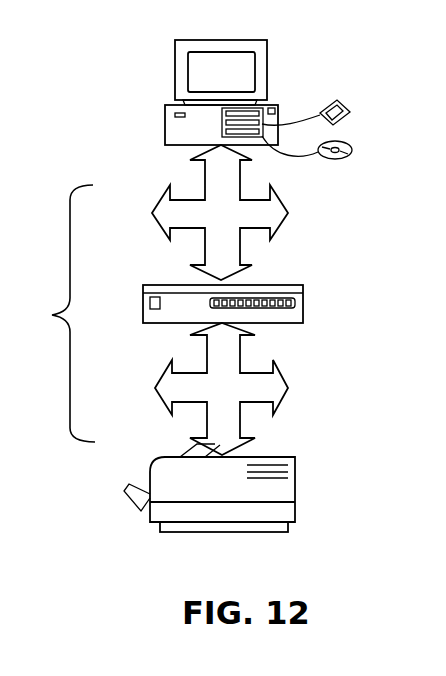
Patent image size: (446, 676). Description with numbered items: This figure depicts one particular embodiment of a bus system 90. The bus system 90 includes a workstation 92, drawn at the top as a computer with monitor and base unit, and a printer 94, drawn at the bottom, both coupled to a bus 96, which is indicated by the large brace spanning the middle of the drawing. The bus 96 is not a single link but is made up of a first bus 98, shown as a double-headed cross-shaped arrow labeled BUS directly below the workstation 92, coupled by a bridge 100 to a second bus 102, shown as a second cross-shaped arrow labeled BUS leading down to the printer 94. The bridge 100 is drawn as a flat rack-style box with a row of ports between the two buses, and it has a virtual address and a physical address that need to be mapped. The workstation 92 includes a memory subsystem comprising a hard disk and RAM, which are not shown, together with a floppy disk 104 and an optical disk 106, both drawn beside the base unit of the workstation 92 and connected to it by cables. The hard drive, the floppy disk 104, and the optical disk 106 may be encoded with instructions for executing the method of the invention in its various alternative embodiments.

The bus system 90 is at (83, 105).
The workstation 92 is at (175, 66).
The printer 94 is at (295, 468).
The bus 96 is at (52, 315).
The first bus 98 is at (288, 212).
The bridge 100 is at (303, 298).
The second bus 102 is at (288, 388).
The floppy disk 104 is at (338, 105).
The optical disk 106 is at (352, 140).